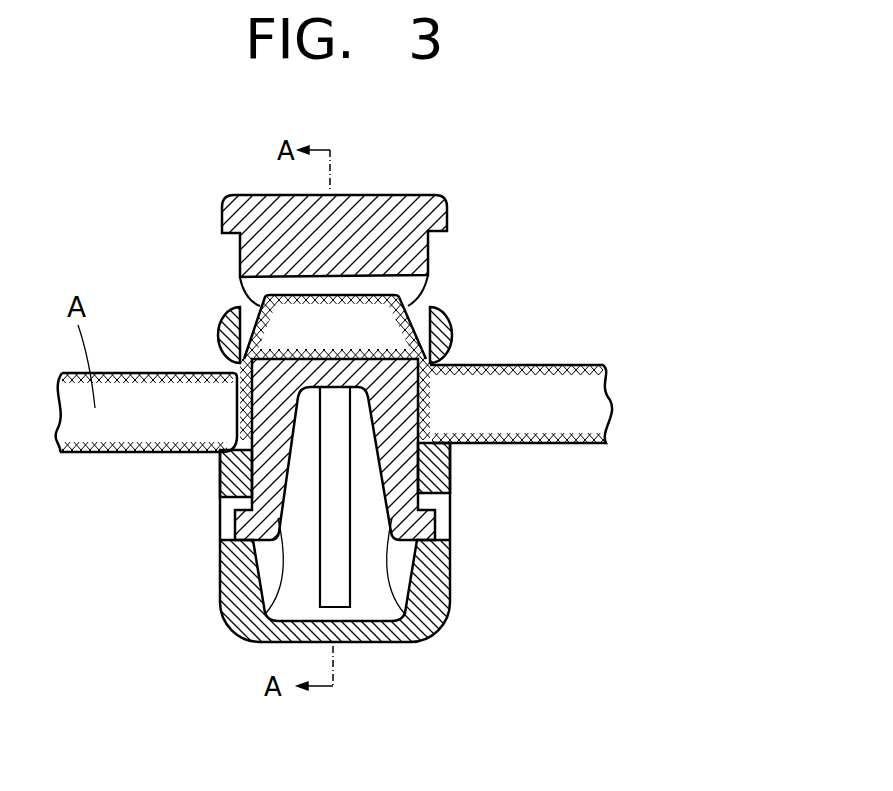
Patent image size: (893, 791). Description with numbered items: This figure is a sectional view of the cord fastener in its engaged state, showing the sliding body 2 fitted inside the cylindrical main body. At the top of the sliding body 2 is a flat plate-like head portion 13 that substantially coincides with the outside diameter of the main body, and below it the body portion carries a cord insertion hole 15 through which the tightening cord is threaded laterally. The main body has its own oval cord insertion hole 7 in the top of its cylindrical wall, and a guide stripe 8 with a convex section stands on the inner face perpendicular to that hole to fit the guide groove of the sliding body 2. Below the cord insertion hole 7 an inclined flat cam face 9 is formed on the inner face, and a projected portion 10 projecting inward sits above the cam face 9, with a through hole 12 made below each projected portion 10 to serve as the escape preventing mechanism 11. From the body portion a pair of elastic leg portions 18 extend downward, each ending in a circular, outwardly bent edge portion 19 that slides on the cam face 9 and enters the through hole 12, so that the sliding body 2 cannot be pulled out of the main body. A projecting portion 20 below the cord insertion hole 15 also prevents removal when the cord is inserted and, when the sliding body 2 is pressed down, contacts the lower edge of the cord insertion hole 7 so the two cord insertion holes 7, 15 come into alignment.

The sliding body 2 is at (348, 184).
The head portion 13 is at (435, 197).
The cord insertion hole 15 is at (402, 287).
The cord insertion hole 7 is at (448, 348).
The projecting portion 20 is at (272, 384).
The projected portion 10 is at (220, 482).
The edge portion 19 is at (240, 520).
The escape preventing mechanism 11 is at (322, 534).
The through hole 12 is at (224, 533).
The cam face 9 is at (220, 587).
The guide stripe 8 is at (335, 590).
The elastic leg portion 18 is at (258, 593).